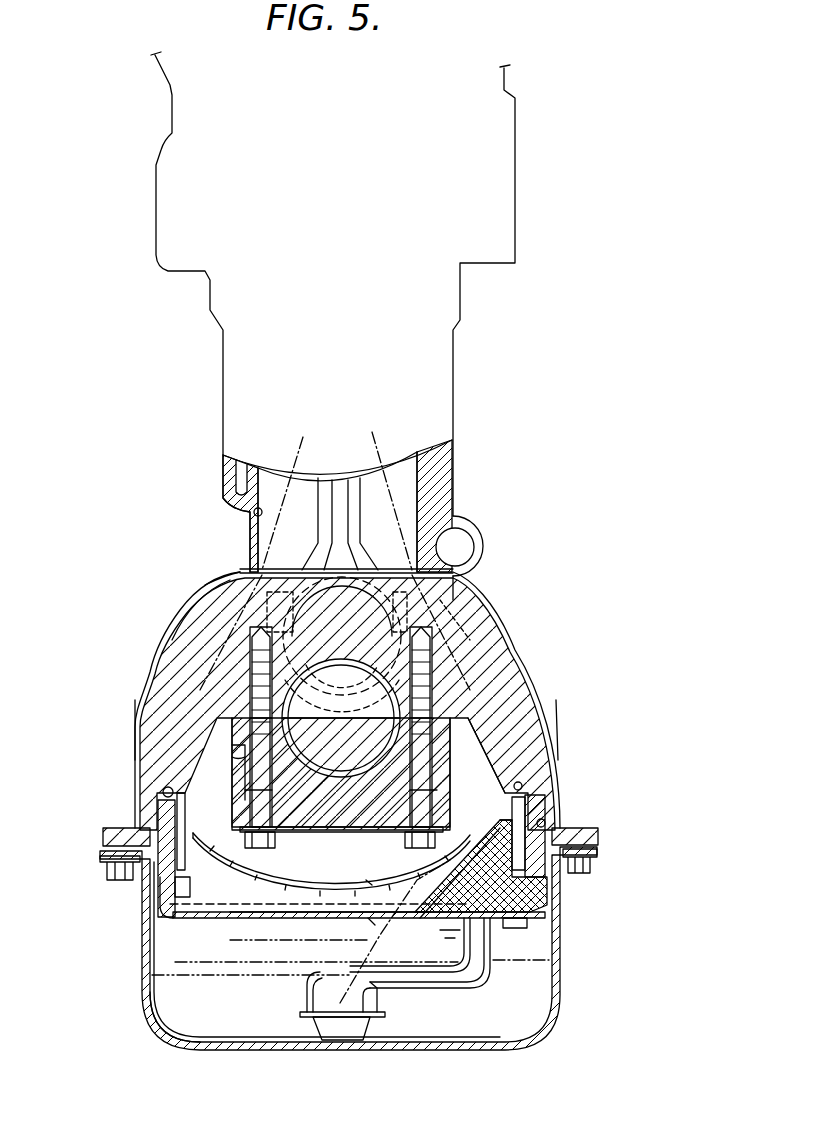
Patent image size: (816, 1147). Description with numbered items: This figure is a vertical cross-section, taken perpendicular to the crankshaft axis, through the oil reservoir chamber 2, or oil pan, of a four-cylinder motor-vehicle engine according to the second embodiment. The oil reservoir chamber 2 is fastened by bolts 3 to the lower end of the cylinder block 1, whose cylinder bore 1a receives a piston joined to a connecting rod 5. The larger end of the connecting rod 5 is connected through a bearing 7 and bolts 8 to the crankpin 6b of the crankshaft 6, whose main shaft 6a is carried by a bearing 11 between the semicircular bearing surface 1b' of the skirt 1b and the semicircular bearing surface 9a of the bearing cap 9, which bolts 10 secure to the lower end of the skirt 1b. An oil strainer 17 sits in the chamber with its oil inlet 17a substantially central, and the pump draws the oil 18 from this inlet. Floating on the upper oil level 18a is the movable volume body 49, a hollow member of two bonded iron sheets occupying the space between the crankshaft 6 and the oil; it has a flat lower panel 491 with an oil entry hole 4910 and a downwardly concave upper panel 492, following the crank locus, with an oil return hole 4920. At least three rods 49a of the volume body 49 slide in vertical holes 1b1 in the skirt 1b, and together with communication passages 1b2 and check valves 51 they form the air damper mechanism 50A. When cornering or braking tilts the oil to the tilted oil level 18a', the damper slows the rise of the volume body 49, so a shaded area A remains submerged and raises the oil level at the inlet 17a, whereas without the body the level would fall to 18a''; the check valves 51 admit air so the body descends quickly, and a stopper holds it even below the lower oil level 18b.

The cylinder block 1 is at (490, 521).
The cylinder bore 1a is at (247, 518).
The skirt 1b is at (338, 699).
The semicircular bearing surface 1b' is at (178, 608).
The vertical hole 1b1 is at (104, 836).
The communication passage 1b2 is at (137, 698).
The oil reservoir chamber 2 is at (142, 972).
The bolt 3 is at (105, 878).
The connecting rod 5 is at (360, 500).
The crankshaft 6 is at (462, 745).
The main shaft 6a is at (252, 790).
The crankpin 6b is at (470, 613).
The bearing 7 is at (460, 585).
The bolt 8 is at (235, 568).
The bearing cap 9 is at (437, 765).
The semicircular bearing surface 9a is at (246, 768).
The bolt 10 is at (280, 838).
The bearing 11 is at (432, 788).
The oil strainer 17 is at (417, 943).
The oil inlet 17a is at (325, 1030).
The oil 18 is at (190, 1023).
The upper oil level 18a is at (529, 881).
The tilted oil level 18a' is at (405, 1011).
The oil level 18a'' is at (438, 992).
The lower oil level 18b is at (549, 962).
The volume body 49 is at (190, 922).
The rod 49a is at (162, 806).
The lower panel 491 is at (203, 925).
The oil entry hole 4910 is at (272, 920).
The upper panel 492 is at (293, 887).
The oil return hole 4920 is at (365, 924).
The damper mechanism 50A is at (150, 772).
The check valve 51 is at (166, 790).
The shaded area A is at (533, 910).